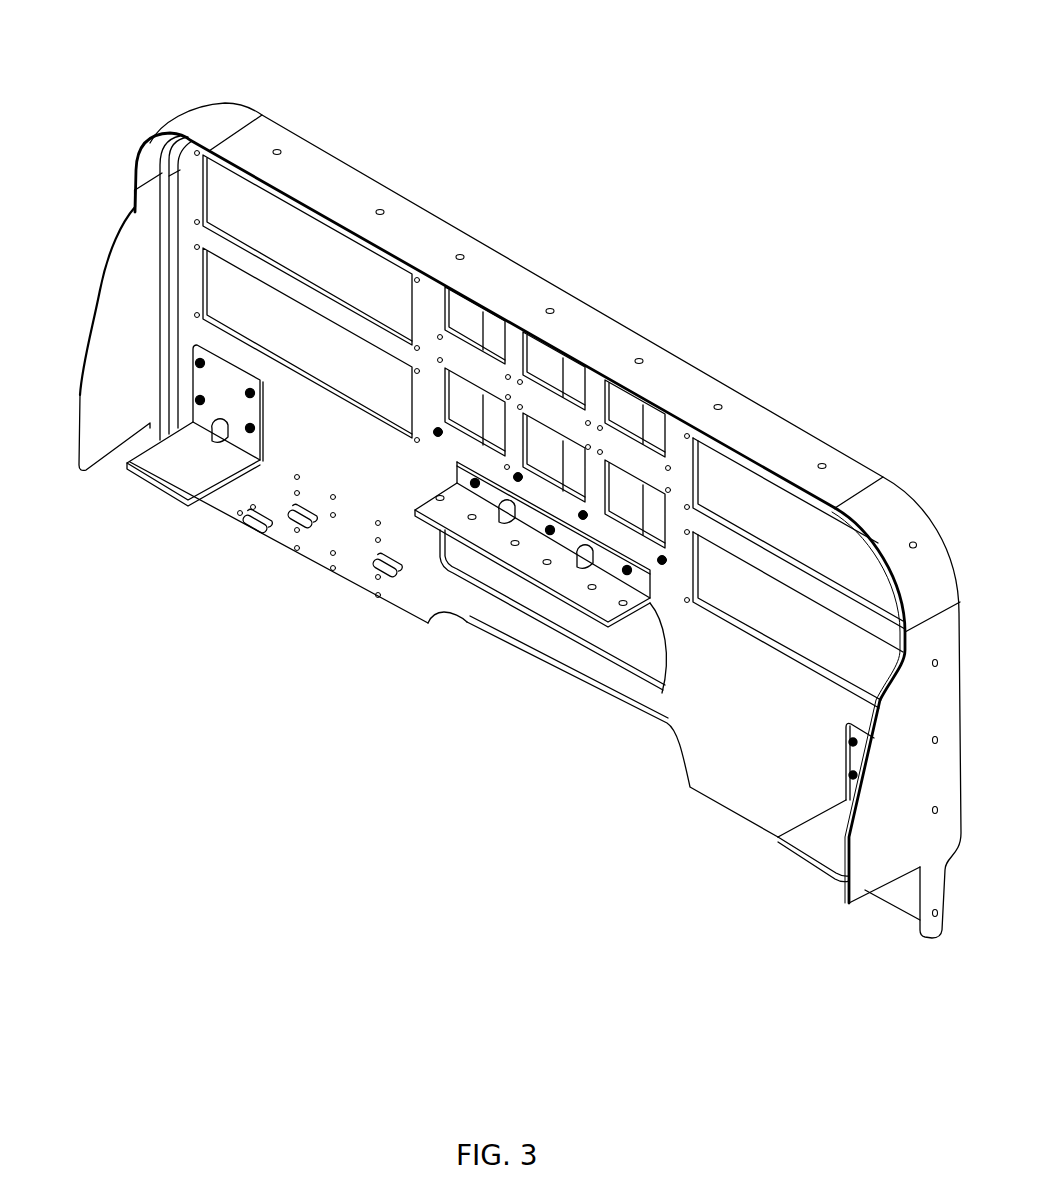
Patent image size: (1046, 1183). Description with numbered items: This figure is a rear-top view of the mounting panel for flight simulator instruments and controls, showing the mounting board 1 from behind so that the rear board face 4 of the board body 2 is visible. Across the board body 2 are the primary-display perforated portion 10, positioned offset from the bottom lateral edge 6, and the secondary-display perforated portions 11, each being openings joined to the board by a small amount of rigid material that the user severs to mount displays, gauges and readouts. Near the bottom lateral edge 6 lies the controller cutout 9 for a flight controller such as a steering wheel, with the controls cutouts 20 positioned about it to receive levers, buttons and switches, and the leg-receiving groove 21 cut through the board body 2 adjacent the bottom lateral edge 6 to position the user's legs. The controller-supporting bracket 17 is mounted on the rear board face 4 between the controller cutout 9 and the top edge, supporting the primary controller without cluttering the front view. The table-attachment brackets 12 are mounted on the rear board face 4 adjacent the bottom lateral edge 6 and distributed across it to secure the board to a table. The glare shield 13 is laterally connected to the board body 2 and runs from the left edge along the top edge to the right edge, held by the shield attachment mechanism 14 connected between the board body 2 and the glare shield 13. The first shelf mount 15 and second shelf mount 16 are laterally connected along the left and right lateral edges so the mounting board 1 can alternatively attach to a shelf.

The mounting board 1 is at (562, 150).
The board body 2 is at (697, 836).
The rear board face 4 is at (772, 736).
The bottom lateral edge 6 is at (433, 616).
The controller cutout 9 is at (653, 697).
The primary-display perforated portion 10 is at (556, 370).
The secondary-display perforated portions 11 is at (298, 214).
The table-attachment brackets 12 is at (180, 480).
The glare shield 13 is at (233, 118).
The shield attachment mechanism 14 is at (160, 201).
The first shelf mount 15 is at (865, 890).
The second shelf mount 16 is at (98, 425).
The controller-supporting bracket 17 is at (568, 587).
The controls cutouts 20 is at (258, 535).
The leg-receiving groove 21 is at (515, 729).